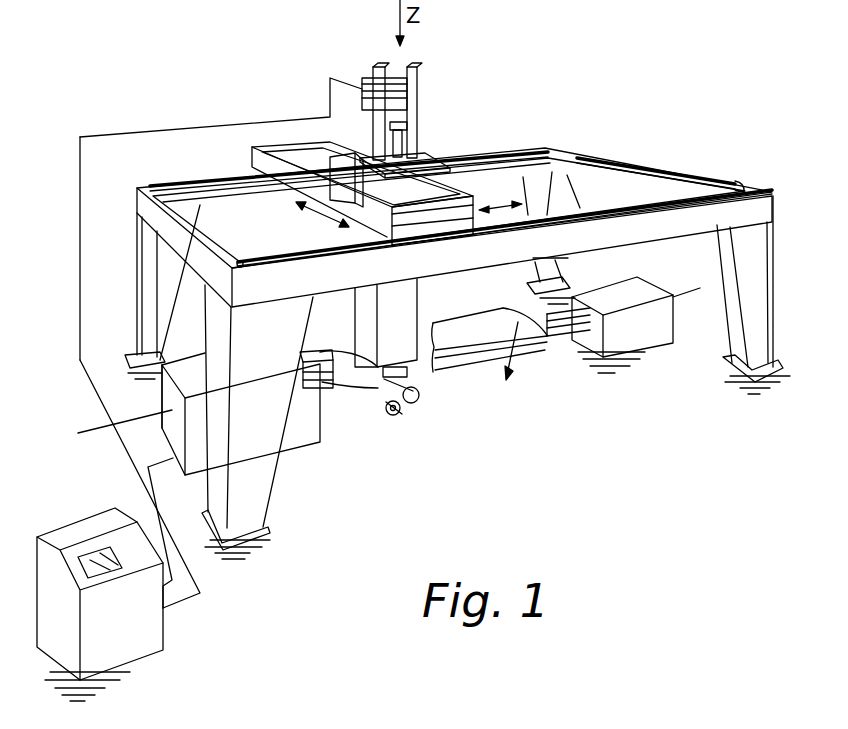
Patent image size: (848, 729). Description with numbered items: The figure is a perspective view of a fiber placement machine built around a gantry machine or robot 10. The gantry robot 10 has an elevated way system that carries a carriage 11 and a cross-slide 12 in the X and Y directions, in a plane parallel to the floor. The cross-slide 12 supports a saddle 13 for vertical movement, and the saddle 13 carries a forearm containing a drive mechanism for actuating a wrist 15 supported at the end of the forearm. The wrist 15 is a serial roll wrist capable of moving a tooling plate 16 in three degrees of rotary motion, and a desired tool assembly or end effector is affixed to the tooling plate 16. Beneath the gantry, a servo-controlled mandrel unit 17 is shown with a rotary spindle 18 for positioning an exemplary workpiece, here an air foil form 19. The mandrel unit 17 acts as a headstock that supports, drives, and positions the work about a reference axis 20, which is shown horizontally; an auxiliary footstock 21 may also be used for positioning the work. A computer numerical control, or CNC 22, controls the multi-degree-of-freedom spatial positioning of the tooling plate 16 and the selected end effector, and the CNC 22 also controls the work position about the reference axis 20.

The gantry machine or robot 10 is at (551, 76).
The carriage 11 is at (250, 162).
The cross-slide 12 is at (320, 204).
The saddle 13 is at (390, 115).
The wrist 15 is at (410, 405).
The tooling plate 16 is at (401, 418).
The mandrel unit 17 is at (302, 435).
The rotary spindle 18 is at (331, 392).
The air foil form 19 is at (541, 349).
The reference axis 20 is at (485, 340).
The auxiliary footstock 21 is at (645, 333).
The computer numerical control (CNC) 22 is at (153, 635).